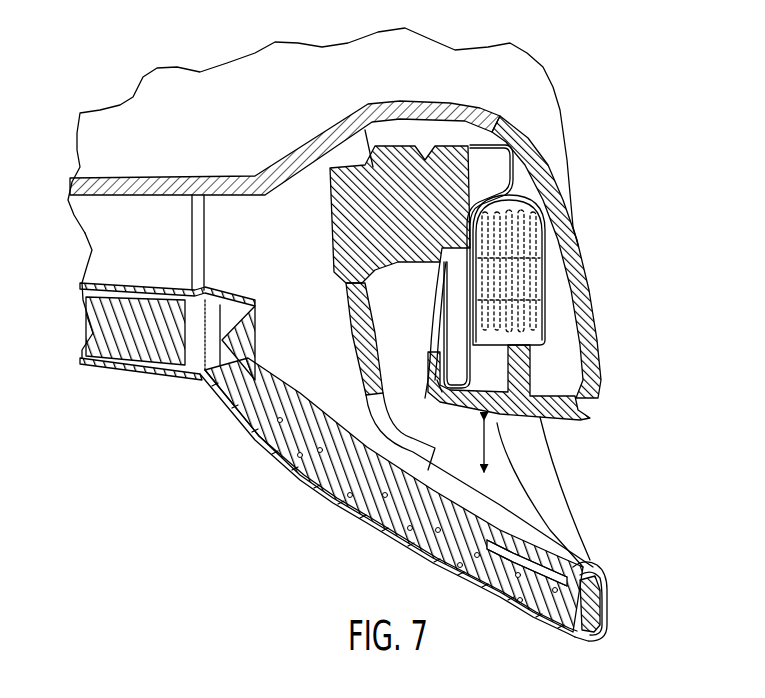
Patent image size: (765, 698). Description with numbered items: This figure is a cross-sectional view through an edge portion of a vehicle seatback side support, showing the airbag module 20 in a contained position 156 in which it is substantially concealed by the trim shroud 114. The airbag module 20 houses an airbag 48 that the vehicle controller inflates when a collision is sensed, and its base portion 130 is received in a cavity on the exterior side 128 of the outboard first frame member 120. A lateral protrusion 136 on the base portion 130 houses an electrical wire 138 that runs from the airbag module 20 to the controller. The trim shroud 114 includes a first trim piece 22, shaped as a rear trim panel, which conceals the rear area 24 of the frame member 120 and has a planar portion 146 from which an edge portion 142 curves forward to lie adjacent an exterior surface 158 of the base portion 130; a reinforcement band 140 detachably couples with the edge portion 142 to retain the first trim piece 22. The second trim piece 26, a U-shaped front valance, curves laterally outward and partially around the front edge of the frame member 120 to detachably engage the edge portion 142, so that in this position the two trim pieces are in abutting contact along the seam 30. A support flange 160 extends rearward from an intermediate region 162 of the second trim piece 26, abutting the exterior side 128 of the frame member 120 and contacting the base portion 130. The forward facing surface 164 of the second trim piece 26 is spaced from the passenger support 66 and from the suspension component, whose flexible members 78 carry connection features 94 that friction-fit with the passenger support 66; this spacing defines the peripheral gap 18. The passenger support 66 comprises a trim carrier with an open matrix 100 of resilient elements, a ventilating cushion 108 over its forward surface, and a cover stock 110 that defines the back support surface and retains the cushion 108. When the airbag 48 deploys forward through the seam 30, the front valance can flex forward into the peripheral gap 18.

The peripheral gap 18 is at (482, 450).
The airbag module 20 is at (540, 162).
The first trim piece 22 is at (560, 166).
The rear area 24 is at (150, 125).
The second trim piece 26 is at (575, 428).
The seam 30 is at (592, 393).
The airbag 48 is at (548, 222).
The passenger support 66 is at (520, 622).
The flexible members 78 is at (385, 437).
The connection features 94 is at (458, 593).
The open matrix 100 is at (200, 372).
The cushion 108 is at (275, 440).
The cover stock 110 is at (312, 488).
The trim shroud 114 is at (628, 355).
The first frame member 120 is at (518, 180).
The exterior side 128 is at (565, 412).
The base portion 130 is at (548, 306).
The lateral protrusion 136 is at (425, 162).
The electrical wire 138 is at (346, 312).
The reinforcement band 140 is at (587, 282).
The edge portion 142 is at (560, 192).
The planar portion 146 is at (80, 172).
The contained position 156 is at (645, 193).
The exterior surface 158 is at (546, 248).
The support flange 160 is at (557, 355).
The intermediate region 162 is at (528, 455).
The forward facing surface 164 is at (553, 440).